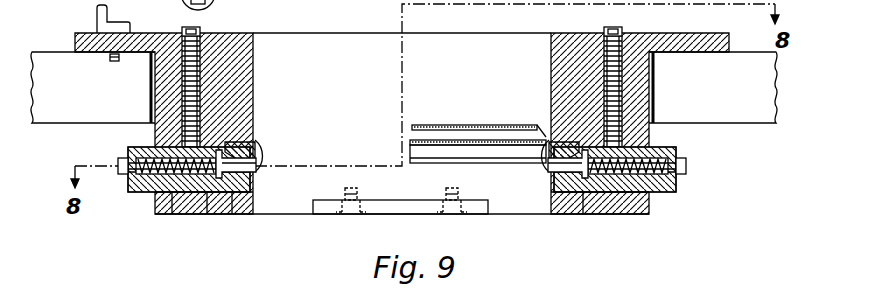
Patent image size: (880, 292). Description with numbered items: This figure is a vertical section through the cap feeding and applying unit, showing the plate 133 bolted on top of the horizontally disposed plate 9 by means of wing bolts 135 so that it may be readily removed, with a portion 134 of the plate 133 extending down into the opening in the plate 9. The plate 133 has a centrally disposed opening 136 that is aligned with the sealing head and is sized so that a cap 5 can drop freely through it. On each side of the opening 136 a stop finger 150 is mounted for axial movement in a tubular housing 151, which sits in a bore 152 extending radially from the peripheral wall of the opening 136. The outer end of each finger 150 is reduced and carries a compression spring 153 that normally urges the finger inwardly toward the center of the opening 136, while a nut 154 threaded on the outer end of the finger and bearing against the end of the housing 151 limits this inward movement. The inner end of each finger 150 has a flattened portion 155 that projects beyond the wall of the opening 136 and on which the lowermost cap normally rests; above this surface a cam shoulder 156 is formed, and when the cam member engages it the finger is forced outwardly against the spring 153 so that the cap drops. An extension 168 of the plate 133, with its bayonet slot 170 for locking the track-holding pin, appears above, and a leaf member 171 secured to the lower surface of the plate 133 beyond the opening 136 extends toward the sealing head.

The cap 5 is at (447, 125).
The plate 9 is at (55, 62).
The plate 133 is at (655, 33).
The portion 134 is at (640, 78).
The wing bolts 135 is at (97, 12).
The opening 136 is at (374, 52).
The stop finger 150 is at (583, 214).
The tubular housing 151 is at (674, 148).
The bore 152 is at (207, 196).
The compression spring 153 is at (674, 180).
The nut 154 is at (125, 163).
The flattened portion 155 is at (548, 167).
The cam shoulder 156 is at (548, 180).
The extension 168 is at (295, 8).
The bayonet slot 170 is at (214, 4).
The leaf member 171 is at (387, 205).